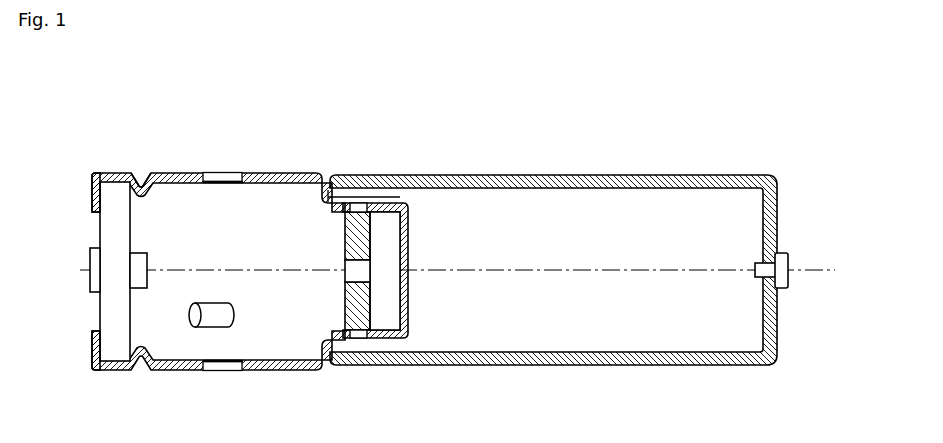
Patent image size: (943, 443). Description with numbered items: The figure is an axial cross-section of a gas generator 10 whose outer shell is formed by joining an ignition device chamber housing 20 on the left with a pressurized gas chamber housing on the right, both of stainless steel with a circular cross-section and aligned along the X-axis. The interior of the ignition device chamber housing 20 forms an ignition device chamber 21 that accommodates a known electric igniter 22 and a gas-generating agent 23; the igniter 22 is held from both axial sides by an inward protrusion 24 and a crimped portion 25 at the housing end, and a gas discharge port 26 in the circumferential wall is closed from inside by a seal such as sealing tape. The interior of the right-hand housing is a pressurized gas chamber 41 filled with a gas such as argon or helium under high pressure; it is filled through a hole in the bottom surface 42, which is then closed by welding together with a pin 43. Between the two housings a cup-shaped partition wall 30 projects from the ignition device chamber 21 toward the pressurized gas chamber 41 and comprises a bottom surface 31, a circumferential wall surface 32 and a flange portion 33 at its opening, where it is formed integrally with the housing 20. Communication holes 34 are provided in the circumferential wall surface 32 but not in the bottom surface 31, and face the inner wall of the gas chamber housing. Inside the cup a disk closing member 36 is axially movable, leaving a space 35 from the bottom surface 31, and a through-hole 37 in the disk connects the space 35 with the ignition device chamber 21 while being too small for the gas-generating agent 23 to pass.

The gas generator 10 is at (472, 158).
The ignition device chamber housing 20 is at (272, 172).
The ignition device chamber 21 is at (207, 253).
The electric igniter 22 is at (94, 268).
The gas-generating agent 23 is at (214, 303).
The inward protrusion 24 is at (146, 182).
The crimped portion 25 is at (96, 192).
The gas discharge port 26 is at (219, 370).
The partition wall 30 is at (373, 272).
The bottom surface 31 is at (410, 212).
The circumferential wall surface 32 is at (378, 210).
The flange portion 33 is at (354, 204).
The communication holes 34 is at (357, 340).
The space 35 is at (386, 262).
The disk closing member 36 is at (336, 232).
The through-hole 37 is at (345, 274).
The pressurized gas chamber 41 is at (542, 253).
The bottom surface 42 is at (772, 208).
The pin 43 is at (787, 284).